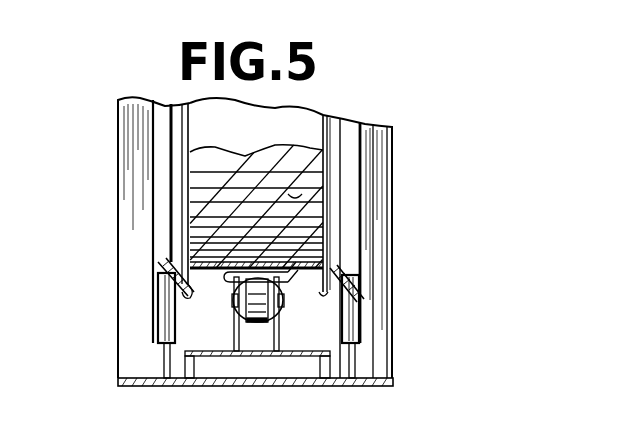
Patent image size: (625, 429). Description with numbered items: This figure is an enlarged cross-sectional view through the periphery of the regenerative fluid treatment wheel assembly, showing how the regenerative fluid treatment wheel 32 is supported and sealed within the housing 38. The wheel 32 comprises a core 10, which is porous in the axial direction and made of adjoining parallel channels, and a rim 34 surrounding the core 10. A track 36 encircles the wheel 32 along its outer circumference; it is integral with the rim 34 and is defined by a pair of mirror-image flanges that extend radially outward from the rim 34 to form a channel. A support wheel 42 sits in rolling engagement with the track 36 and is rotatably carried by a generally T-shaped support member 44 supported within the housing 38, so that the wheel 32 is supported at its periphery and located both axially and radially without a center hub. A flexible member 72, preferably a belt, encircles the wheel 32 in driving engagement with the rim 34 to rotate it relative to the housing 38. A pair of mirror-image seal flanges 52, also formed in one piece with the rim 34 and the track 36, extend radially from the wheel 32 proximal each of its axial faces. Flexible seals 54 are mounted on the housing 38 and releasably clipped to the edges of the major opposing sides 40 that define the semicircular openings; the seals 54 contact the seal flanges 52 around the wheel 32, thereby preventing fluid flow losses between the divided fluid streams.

The core 10 is at (298, 199).
The regenerative fluid treatment wheel 32 is at (207, 148).
The rim 34 is at (318, 265).
The track 36 is at (226, 274).
The housing 38 is at (392, 386).
The major opposing sides 40 is at (164, 368).
The support wheel 42 is at (279, 312).
The support member 44 is at (234, 318).
The seal flange 52 is at (157, 318).
The flexible seal 54 is at (178, 265).
The flexible member 72 is at (325, 238).